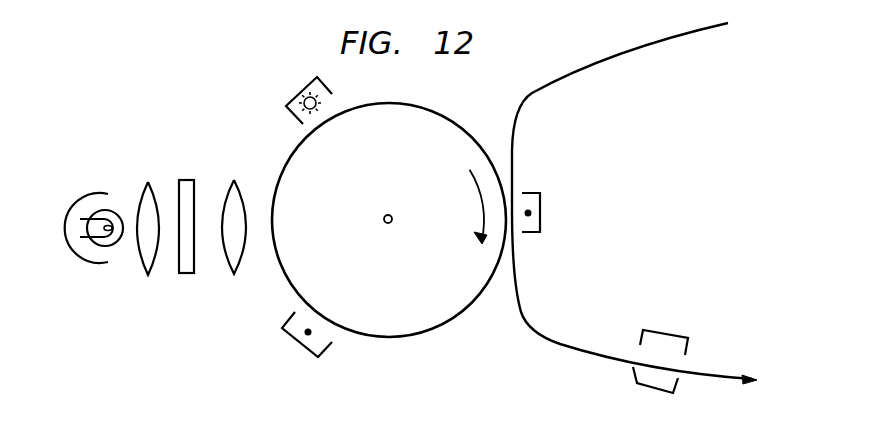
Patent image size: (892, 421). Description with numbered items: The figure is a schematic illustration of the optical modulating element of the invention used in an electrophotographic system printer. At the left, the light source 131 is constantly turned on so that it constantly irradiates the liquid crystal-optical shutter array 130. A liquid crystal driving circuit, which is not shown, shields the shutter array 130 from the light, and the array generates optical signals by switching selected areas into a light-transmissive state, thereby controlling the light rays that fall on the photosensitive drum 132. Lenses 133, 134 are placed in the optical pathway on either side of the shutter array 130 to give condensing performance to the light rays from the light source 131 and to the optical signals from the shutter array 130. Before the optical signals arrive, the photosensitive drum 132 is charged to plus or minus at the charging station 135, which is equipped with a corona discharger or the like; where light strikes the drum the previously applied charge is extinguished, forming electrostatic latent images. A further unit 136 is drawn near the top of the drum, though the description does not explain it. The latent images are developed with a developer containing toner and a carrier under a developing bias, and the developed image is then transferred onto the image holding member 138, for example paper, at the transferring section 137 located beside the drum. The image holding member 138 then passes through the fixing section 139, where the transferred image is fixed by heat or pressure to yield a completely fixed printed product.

The liquid crystal-optical shutter array 130 is at (184, 178).
The light source 131 is at (93, 190).
The photosensitive drum 132 is at (472, 134).
The lens 133 is at (143, 190).
The lens 134 is at (238, 190).
The charging station 135 is at (328, 345).
The charging unit 136 is at (290, 106).
The transferring section 137 is at (541, 213).
The image holding member 138 is at (592, 61).
The fixing section 139 is at (632, 369).